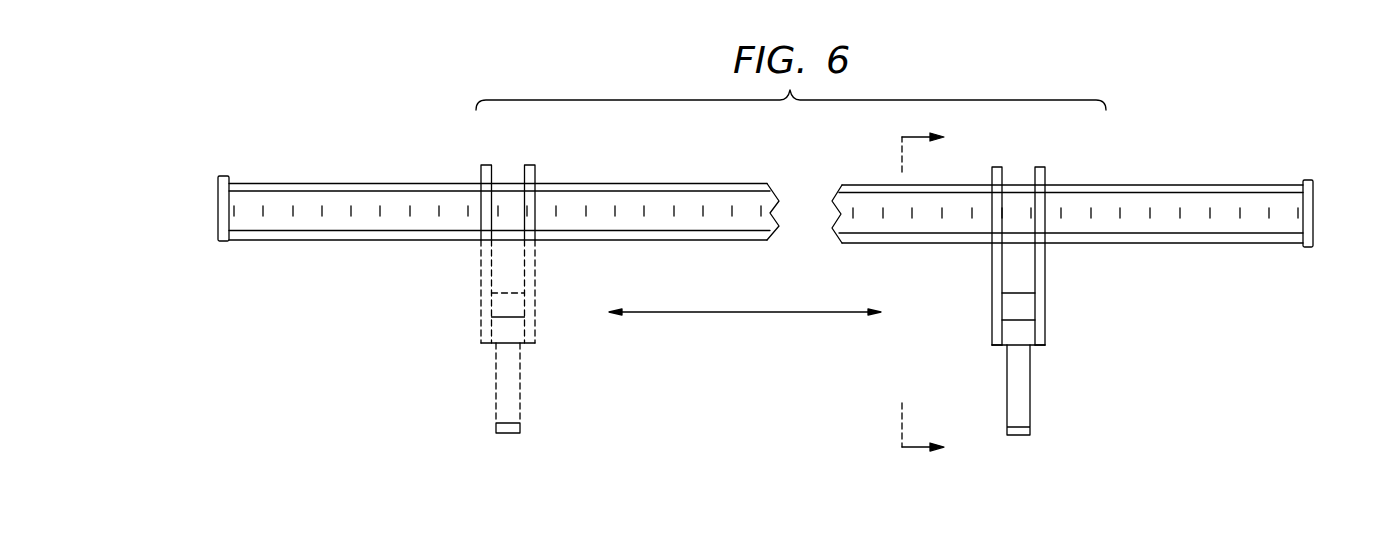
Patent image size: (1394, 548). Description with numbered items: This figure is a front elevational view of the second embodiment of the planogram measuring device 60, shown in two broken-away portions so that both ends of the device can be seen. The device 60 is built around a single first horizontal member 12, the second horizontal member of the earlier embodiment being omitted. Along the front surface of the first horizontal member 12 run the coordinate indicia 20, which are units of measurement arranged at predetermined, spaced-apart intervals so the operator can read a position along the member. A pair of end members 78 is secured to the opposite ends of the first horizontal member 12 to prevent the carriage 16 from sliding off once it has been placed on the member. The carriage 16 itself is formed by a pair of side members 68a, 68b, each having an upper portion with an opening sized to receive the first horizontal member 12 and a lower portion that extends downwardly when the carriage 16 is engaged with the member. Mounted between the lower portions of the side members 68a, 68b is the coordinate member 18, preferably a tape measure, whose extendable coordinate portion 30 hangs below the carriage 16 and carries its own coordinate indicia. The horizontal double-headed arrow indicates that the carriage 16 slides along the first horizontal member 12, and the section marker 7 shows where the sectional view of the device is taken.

The planogram measuring device 60 is at (314, 139).
The first horizontal member 12 is at (1214, 176).
The coordinate indicia 20 is at (632, 190).
The end members 78 is at (222, 198).
The carriage 16 is at (553, 319).
The coordinate member 18 is at (515, 273).
The extendable coordinate portion 30 is at (514, 390).
The side member 68a is at (995, 258).
The side member 68b is at (1043, 257).
The section line 7- 7 is at (939, 293).